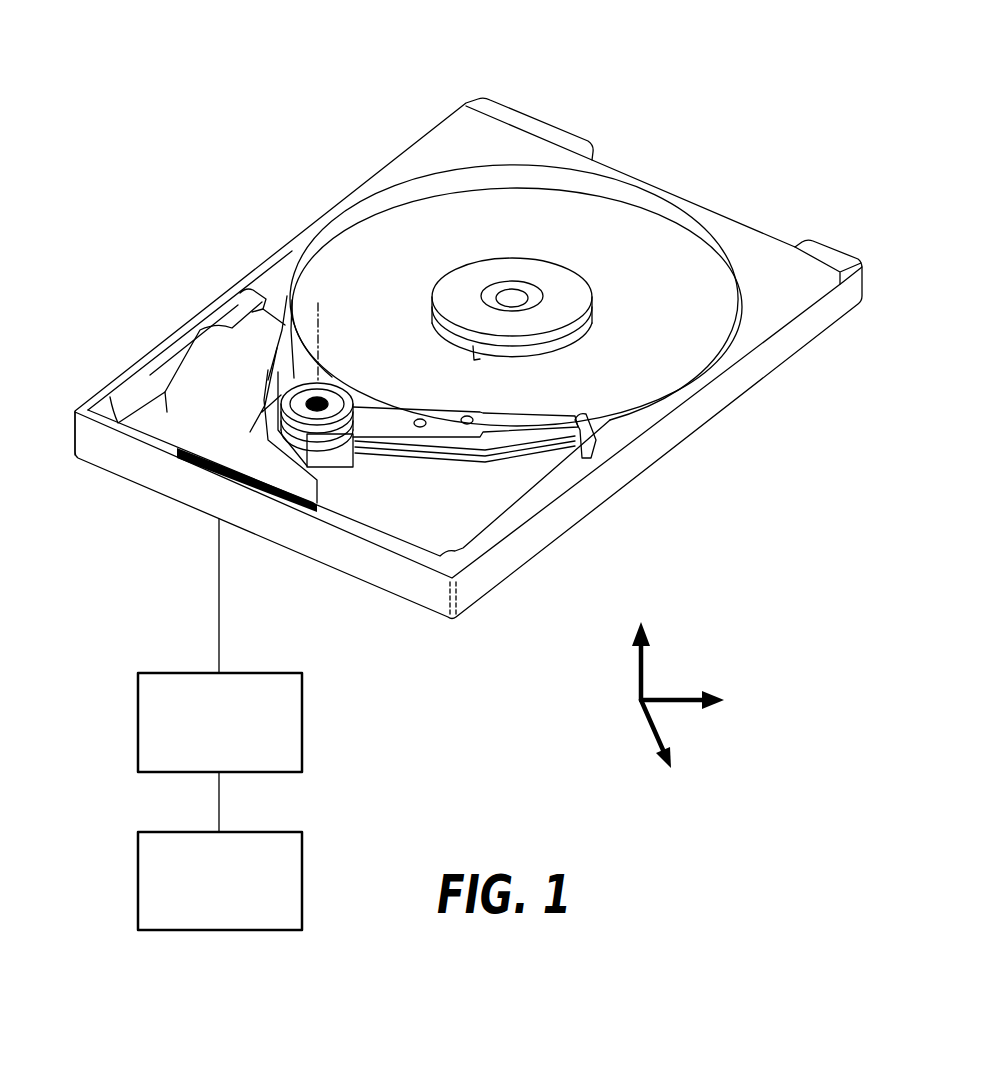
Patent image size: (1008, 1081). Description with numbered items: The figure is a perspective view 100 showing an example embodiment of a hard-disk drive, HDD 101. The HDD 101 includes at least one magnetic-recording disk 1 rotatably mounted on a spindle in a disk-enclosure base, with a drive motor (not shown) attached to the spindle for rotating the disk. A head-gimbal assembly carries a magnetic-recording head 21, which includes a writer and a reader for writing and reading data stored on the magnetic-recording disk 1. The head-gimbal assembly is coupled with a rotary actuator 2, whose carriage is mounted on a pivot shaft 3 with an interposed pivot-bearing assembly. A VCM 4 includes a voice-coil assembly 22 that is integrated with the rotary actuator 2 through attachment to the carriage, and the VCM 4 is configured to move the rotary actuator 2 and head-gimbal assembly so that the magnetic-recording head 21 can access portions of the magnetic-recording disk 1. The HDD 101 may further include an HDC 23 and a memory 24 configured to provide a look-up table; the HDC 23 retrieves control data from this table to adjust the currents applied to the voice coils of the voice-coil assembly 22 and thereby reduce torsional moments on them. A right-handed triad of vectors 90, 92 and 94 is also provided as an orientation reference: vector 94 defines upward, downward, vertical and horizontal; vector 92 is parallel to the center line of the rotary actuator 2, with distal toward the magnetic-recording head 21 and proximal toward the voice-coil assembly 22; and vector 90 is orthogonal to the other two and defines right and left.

The perspective view 100 is at (128, 46).
The HDD 101 is at (442, 92).
The magnetic-recording disk 1 is at (642, 258).
The rotary actuator 2 is at (392, 428).
The pivot shaft 3 is at (307, 318).
The VCM 4 is at (184, 392).
The magnetic-recording head 21 is at (580, 423).
The voice-coil assembly 22 is at (210, 447).
The HDC 23 is at (302, 707).
The memory 24 is at (302, 866).
The vector 90 is at (650, 722).
The vector 92 is at (665, 700).
The vector 94 is at (640, 665).